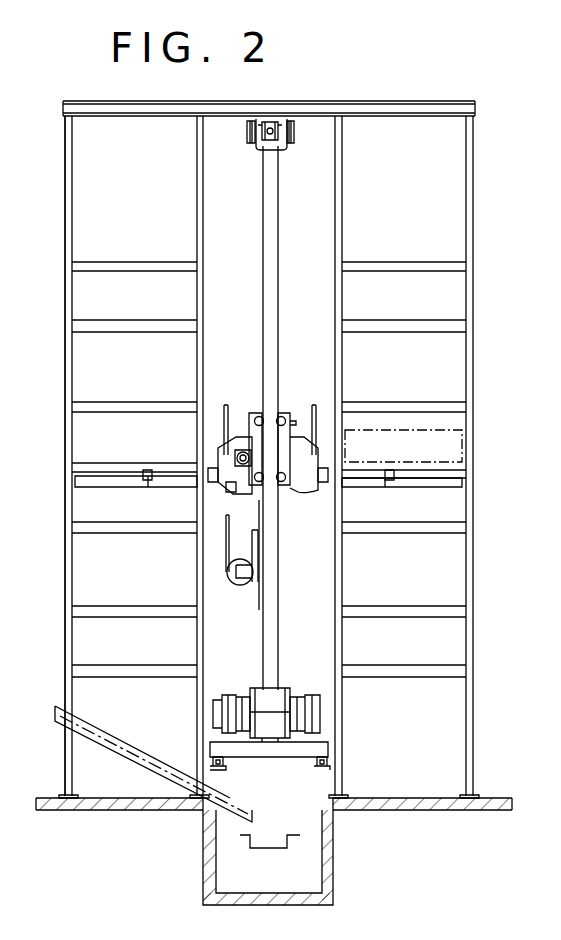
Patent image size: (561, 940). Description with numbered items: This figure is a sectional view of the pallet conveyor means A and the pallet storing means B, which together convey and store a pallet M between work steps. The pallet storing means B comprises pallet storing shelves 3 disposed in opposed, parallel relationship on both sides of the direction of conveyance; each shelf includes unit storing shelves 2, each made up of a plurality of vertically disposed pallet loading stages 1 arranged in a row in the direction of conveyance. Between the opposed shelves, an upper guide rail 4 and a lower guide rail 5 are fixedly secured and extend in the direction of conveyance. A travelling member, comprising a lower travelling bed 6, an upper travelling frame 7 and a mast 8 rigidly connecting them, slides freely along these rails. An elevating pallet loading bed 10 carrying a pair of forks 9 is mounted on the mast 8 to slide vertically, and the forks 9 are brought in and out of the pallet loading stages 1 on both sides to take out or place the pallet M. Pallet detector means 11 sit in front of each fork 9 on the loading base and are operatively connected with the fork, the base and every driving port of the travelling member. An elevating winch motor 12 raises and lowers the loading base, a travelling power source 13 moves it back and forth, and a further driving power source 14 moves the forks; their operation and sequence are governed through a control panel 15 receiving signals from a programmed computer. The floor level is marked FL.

The pallet loading stage 1 is at (158, 262).
The unit storing shelf 2 is at (493, 275).
The pallet storing shelf 3 is at (452, 172).
The upper guide rail 4 is at (270, 125).
The lower guide rail 5 is at (218, 764).
The lower travelling bed 6 is at (326, 748).
The upper travelling frame 7 is at (282, 148).
The mast 8 is at (279, 318).
The fork 9 is at (178, 487).
The elevating pallet loading bed 10 is at (236, 490).
The pallet detector means 11 is at (150, 472).
The elevating winch motor 12 is at (276, 738).
The travelling power source 13 is at (242, 555).
The driving power source 14 is at (240, 452).
The control panel 15 is at (153, 764).
The pallet conveyor means A is at (258, 412).
The pallet storing means B is at (64, 303).
The pallet M is at (456, 442).
The floor level FL is at (500, 796).